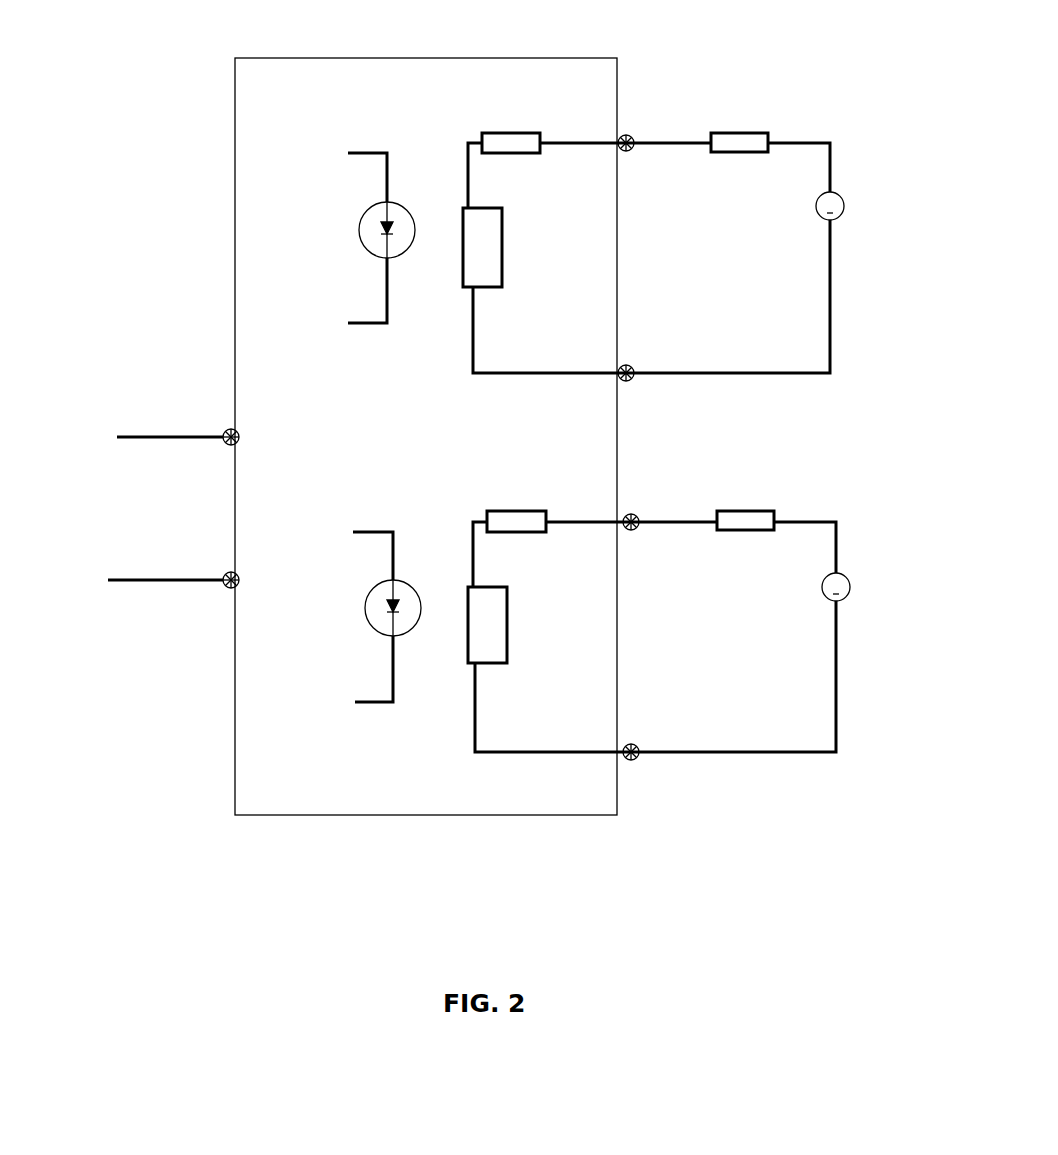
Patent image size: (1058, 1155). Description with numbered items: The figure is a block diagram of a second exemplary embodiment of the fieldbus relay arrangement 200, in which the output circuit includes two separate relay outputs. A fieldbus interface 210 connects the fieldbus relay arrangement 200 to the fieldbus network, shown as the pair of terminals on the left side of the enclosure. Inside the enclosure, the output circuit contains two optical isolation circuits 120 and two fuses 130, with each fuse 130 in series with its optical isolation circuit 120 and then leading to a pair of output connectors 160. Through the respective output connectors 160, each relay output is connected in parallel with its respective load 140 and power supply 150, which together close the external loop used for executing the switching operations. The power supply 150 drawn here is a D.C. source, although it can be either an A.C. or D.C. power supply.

The fieldbus relay arrangement 200 is at (400, 26).
The optical isolation circuit 120 is at (438, 587).
The fuse 130 is at (542, 132).
The load 140 is at (732, 130).
The power supply 150 is at (845, 207).
The output connector 160 is at (629, 150).
The fieldbus interface 210 is at (118, 532).